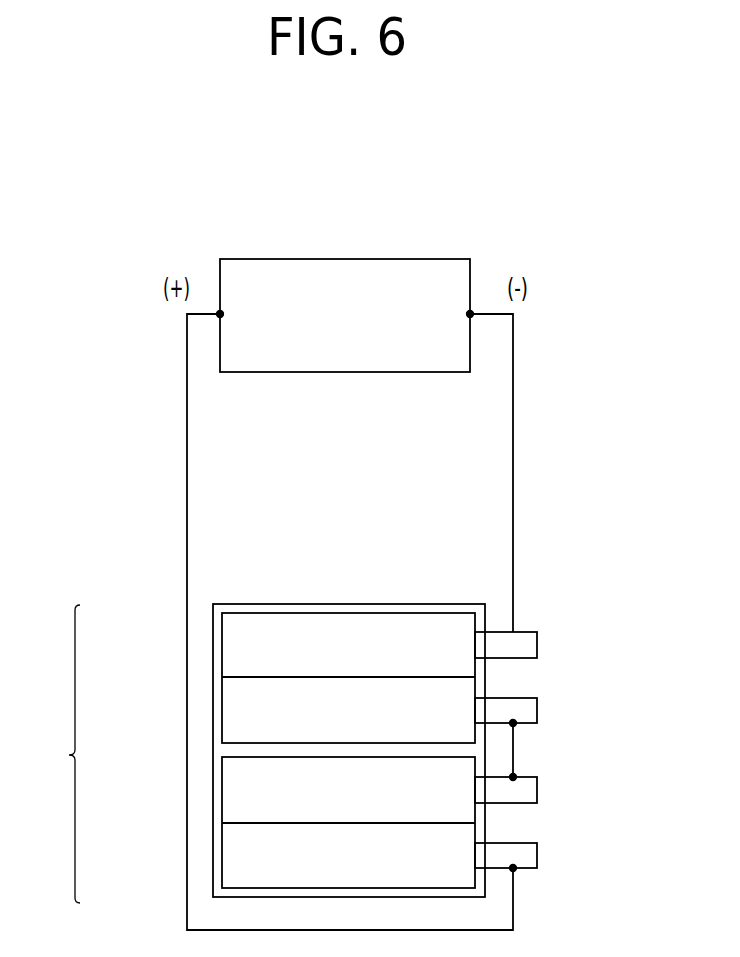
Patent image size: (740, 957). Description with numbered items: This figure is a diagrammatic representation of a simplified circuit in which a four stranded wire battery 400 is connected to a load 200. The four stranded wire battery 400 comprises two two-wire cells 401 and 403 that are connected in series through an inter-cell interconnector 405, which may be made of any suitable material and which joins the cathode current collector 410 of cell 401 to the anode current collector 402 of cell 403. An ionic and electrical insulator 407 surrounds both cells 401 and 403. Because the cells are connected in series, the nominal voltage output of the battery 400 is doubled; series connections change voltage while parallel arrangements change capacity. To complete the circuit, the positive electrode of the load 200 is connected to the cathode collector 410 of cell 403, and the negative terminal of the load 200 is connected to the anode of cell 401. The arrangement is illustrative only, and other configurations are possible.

The load 200 is at (240, 277).
The four stranded wire battery 400 is at (49, 754).
The two wire cell 401 is at (172, 605).
The two wire cell 403 is at (173, 758).
The ionic and electrical insulator 407 is at (228, 602).
The anode current collector 402 is at (527, 646).
The cathode current collector 410 is at (527, 712).
The inter-cell interconnector 405 is at (514, 754).